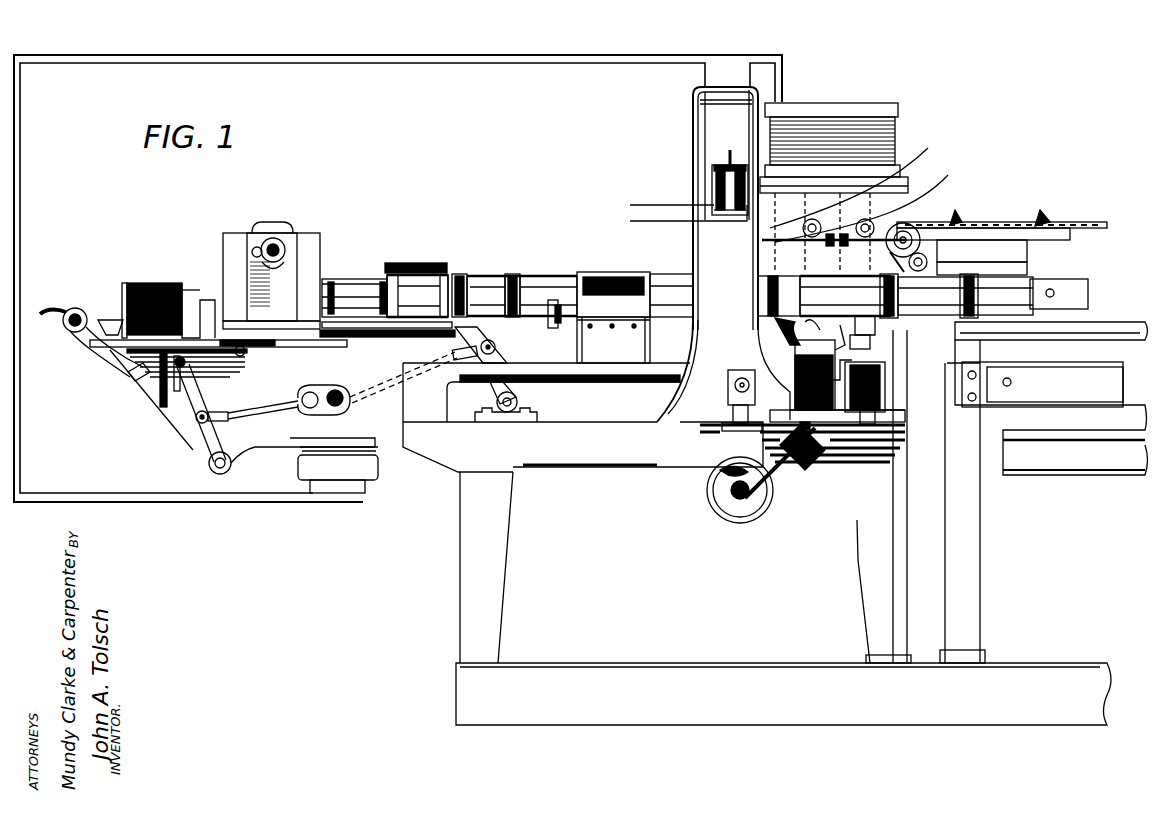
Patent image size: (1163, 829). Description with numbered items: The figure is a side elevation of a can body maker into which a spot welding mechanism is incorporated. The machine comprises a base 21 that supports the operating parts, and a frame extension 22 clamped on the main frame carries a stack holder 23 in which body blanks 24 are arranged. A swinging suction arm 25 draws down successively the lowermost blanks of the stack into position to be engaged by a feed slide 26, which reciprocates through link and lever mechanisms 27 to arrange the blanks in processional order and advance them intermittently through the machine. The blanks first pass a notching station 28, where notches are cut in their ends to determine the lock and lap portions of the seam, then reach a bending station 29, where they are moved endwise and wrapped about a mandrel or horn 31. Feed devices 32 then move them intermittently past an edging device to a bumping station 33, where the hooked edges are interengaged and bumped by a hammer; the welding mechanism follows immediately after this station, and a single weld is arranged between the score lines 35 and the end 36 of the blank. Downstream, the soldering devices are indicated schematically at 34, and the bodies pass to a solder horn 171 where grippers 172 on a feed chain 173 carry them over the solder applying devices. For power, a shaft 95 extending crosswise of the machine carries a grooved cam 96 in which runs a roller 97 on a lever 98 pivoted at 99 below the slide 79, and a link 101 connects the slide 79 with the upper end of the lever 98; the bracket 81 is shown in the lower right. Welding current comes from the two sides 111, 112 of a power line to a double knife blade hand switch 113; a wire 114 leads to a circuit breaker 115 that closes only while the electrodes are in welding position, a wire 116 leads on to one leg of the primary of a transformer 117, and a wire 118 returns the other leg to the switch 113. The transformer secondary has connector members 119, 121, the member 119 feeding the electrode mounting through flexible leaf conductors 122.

The base 21 is at (465, 547).
The frame extension 22 is at (285, 436).
The stack holder 23 is at (128, 283).
The body blanks 24 is at (168, 290).
The swinging suction arm 25 is at (138, 380).
The feed slide 26 is at (248, 366).
The link and lever mechanisms 27 is at (325, 400).
The notching station 28 is at (305, 252).
The bending station 29 is at (432, 266).
The mandrel or horn 31 is at (513, 274).
The feed devices 32 is at (355, 284).
The bumping station 33 is at (768, 286).
The soldering devices 34 is at (735, 390).
The score lines 35 is at (985, 226).
The end of the blank 36 is at (920, 227).
The slide 79 is at (815, 410).
The support bracket 81 is at (860, 410).
The shaft 95 is at (740, 498).
The grooved cam 96 is at (712, 510).
The roller 97 is at (760, 502).
The lever 98 is at (790, 480).
The pivot 99 is at (828, 450).
The link 101 is at (712, 472).
The power line side 111 is at (661, 205).
The power line side 112 is at (664, 222).
The hand switch 113 is at (770, 170).
The wire 114 is at (700, 72).
The circuit breaker 115 is at (348, 482).
The wire 116 is at (60, 502).
The transformer 117 is at (858, 110).
The wire 118 is at (765, 58).
The connector member 119 is at (870, 198).
The connector member 121 is at (865, 175).
The flexible leaf conductors 122 is at (862, 330).
The solder horn 171 is at (1015, 270).
The grippers 172 is at (958, 220).
The feed chain 173 is at (1038, 222).